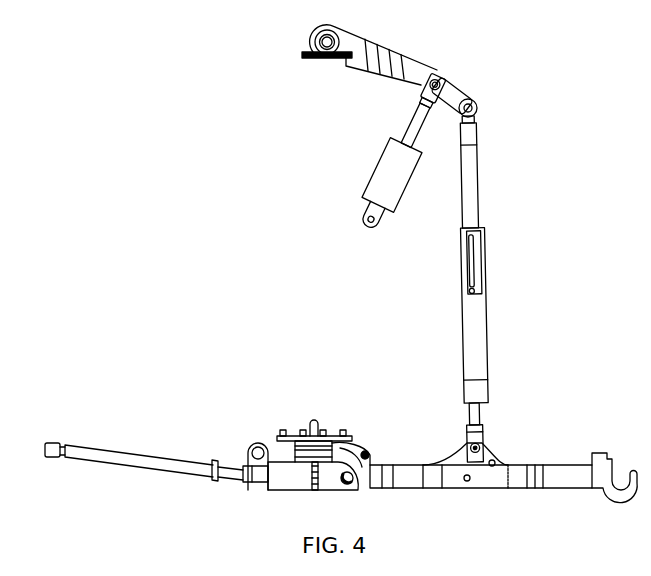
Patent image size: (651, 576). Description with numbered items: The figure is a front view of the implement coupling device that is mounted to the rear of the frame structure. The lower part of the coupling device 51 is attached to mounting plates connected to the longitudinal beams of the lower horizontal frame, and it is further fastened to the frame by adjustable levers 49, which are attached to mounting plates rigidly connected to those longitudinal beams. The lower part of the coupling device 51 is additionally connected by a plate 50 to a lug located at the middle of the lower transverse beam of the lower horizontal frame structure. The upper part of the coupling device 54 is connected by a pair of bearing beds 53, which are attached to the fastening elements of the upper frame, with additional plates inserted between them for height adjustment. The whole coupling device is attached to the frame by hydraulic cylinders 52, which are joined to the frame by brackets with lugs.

The adjustable lever 49 is at (110, 457).
The plate 50 is at (255, 440).
The lower part of the coupling device 51 is at (342, 432).
The hydraulic cylinder 52 is at (373, 192).
The bearing bed 53 is at (308, 58).
The upper part of the coupling device 54 is at (355, 43).